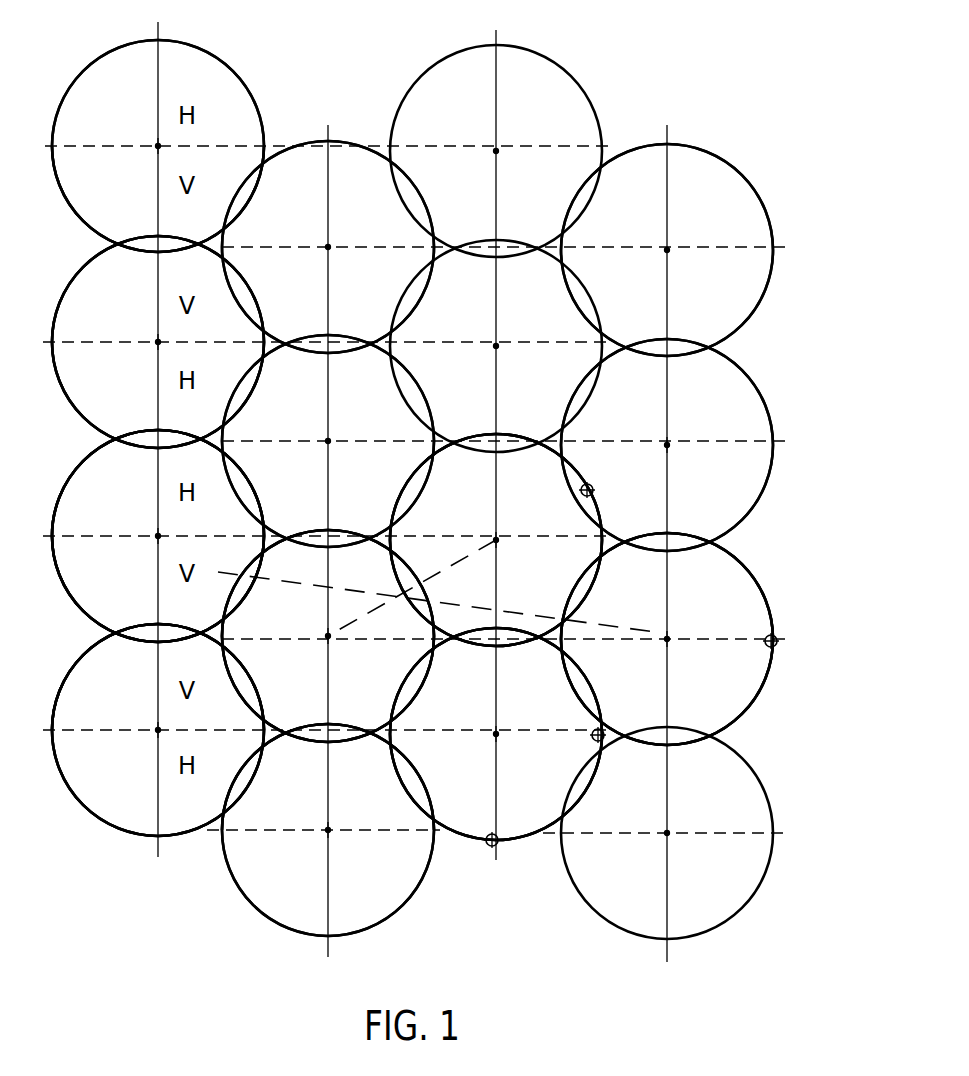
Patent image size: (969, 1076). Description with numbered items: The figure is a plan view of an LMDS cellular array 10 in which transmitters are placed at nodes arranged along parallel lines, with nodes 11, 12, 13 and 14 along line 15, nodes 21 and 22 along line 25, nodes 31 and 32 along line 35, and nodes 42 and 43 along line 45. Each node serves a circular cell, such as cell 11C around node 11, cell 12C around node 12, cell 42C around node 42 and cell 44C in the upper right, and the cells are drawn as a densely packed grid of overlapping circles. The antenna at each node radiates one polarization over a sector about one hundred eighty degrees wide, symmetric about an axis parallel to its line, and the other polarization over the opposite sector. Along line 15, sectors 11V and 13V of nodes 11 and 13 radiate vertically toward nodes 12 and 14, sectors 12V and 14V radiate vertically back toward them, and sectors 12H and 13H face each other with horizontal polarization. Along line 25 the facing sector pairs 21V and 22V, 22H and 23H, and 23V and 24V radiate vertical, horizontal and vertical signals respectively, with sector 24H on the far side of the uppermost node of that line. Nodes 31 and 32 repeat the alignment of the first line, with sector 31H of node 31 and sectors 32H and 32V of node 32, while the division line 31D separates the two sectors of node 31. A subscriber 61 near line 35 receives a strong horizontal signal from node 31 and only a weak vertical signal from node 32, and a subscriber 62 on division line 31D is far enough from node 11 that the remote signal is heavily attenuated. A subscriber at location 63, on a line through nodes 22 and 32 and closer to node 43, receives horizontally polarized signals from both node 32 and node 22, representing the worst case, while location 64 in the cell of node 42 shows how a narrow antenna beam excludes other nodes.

The cellular array 10 is at (148, 936).
The node 11 is at (158, 731).
The cell 11C is at (94, 812).
The sector 11V is at (140, 702).
The node 12 is at (158, 537).
The cell 12C is at (60, 574).
The sector 12H is at (140, 502).
The sector 12V is at (140, 604).
The node 13 is at (158, 343).
The sector 13H is at (140, 404).
The sector 13V is at (140, 310).
The node 14 is at (158, 147).
The sector 14V is at (140, 217).
The line 15 is at (157, 852).
The node 21 is at (328, 831).
The sector 21V is at (328, 777).
The node 22 is at (328, 637).
The sector 22H is at (328, 583).
The sector 22V is at (328, 689).
The sector 23H is at (328, 494).
The sector 23V is at (328, 388).
The sector 24H is at (328, 194).
The sector 24V is at (328, 300).
The line 25 is at (327, 952).
The node 31 is at (496, 734).
The division line 31D is at (428, 712).
The sector 31H is at (496, 787).
The node 32 is at (496, 540).
The sector 32H is at (496, 487).
The sector 32V is at (496, 593).
The line 35 is at (494, 857).
The node 42 is at (667, 639).
The cell 42C is at (762, 596).
The node 43 is at (667, 445).
The cell 44C is at (760, 200).
The line 45 is at (666, 955).
The subscriber 61 is at (500, 846).
The subscriber 62 is at (592, 739).
The location 63 is at (593, 485).
The location 64 is at (776, 646).